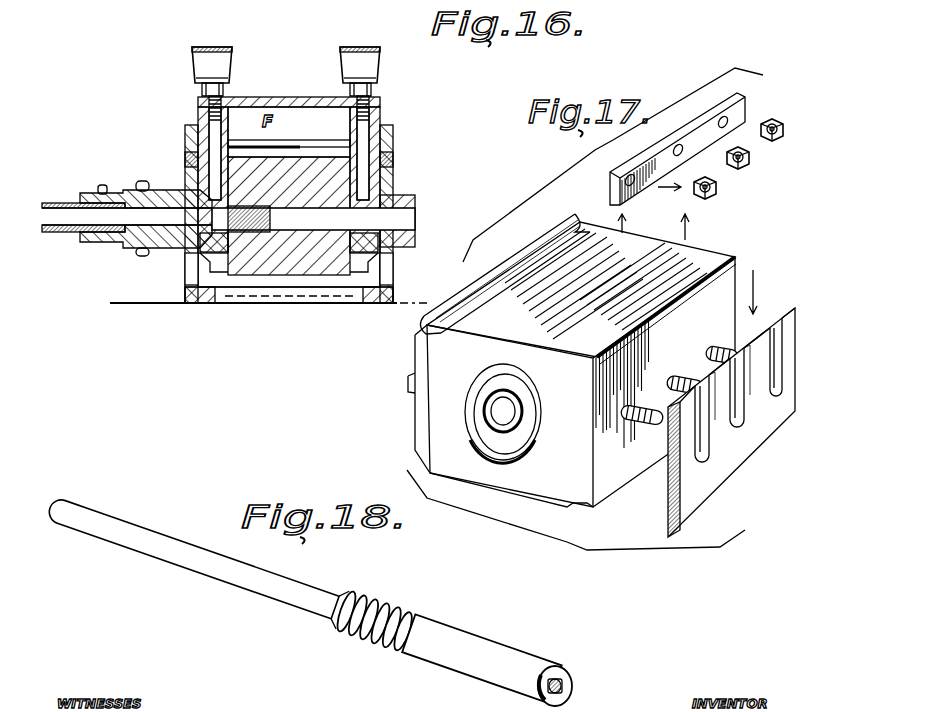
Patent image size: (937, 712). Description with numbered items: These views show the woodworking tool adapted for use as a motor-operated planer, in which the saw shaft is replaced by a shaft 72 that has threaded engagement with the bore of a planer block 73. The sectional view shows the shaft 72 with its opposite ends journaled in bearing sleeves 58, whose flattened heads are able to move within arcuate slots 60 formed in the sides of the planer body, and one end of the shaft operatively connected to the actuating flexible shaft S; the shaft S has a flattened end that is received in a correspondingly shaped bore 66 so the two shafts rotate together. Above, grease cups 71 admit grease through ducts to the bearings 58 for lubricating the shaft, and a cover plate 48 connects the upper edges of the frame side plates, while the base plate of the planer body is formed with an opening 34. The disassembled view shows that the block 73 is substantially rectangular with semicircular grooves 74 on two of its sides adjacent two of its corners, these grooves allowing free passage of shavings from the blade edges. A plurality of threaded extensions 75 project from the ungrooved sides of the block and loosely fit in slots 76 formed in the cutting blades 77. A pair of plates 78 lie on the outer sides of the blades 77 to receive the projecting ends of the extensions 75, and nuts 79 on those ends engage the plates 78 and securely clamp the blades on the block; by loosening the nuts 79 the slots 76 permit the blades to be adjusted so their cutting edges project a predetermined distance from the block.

In FIG. 16, the grease cup 71 is at (232, 51).
In FIG. 16, the cover plate 48 is at (265, 98).
In FIG. 16, the planer block 73 is at (381, 131).
In FIG. 16, the arcuate slot 60 is at (186, 163).
In FIG. 16, the bearing sleeve 58 is at (411, 196).
In FIG. 16, the flexible shaft S is at (52, 211).
In FIG. 16, the opening 34 is at (243, 300).
In FIG. 16, the shaft 72 is at (323, 222).
In FIG. 18, the shaft 72 is at (289, 603).
In FIG. 16, the cutting blade 77 is at (310, 148).
In FIG. 17, the cutting blade 77 is at (731, 422).
In FIG. 17, the semicircular groove 74 is at (523, 263).
In FIG. 17, the plate 78 is at (691, 137).
In FIG. 17, the nut 79 is at (770, 144).
In FIG. 17, the threaded extension 75 is at (632, 408).
In FIG. 17, the slot 76 is at (708, 454).
In FIG. 18, the bore 66 is at (561, 677).